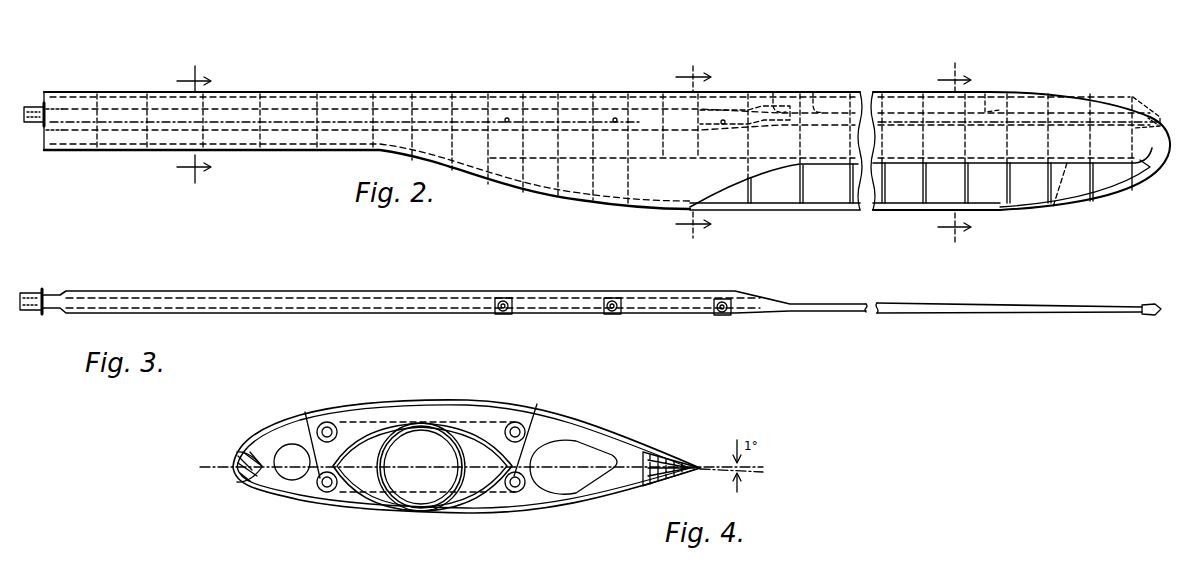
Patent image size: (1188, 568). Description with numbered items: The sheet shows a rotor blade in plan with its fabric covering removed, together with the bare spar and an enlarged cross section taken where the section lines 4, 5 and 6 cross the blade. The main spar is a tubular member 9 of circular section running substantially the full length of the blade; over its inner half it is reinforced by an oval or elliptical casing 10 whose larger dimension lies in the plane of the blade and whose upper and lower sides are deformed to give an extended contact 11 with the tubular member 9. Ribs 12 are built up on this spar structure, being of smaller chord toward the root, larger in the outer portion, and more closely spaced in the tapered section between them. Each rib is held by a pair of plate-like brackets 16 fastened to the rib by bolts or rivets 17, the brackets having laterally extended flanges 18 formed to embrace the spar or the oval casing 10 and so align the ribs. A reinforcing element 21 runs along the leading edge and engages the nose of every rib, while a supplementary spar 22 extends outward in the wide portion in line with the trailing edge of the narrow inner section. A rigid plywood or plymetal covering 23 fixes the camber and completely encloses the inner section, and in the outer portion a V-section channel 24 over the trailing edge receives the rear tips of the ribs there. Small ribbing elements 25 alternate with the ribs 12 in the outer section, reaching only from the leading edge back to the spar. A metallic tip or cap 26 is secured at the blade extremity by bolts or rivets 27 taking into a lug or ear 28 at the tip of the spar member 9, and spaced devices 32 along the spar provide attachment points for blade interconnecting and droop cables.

In FIG. 2, the section line 4— 4 is at (194, 125).
In FIG. 2, the section line 5— 5 is at (691, 152).
In FIG. 2, the section line 6— 6 is at (952, 156).
In FIG. 2, the tubular member 9 is at (238, 112).
In FIG. 3, the tubular member 9 is at (250, 318).
In FIG. 4, the tubular member 9 is at (447, 437).
In FIG. 3, the casing 10 is at (252, 296).
In FIG. 4, the casing 10 is at (492, 442).
In FIG. 4, the extended contact 11 is at (422, 412).
In FIG. 2, the ribs 12 is at (332, 148).
In FIG. 4, the ribs 12 is at (556, 430).
In FIG. 4, the brackets 16 is at (345, 496).
In FIG. 4, the bolts or rivets 17 is at (305, 412).
In FIG. 4, the flanges 18 is at (380, 406).
In FIG. 4, the leading edge reenforcing element 21 is at (242, 480).
In FIG. 2, the supplementary spar 22 is at (1052, 213).
In FIG. 2, the covering 23 is at (136, 138).
In FIG. 4, the covering 23 is at (262, 434).
In FIG. 2, the strengthening element 24 is at (887, 210).
In FIG. 2, the small ribbing elements 25 is at (770, 102).
In FIG. 2, the metallic tip or cap 26 is at (1148, 178).
In FIG. 2, the bolts or rivets 27 is at (1143, 114).
In FIG. 3, the lug or ear 28 is at (1146, 313).
In FIG. 3, the spaced devices 32 is at (498, 298).